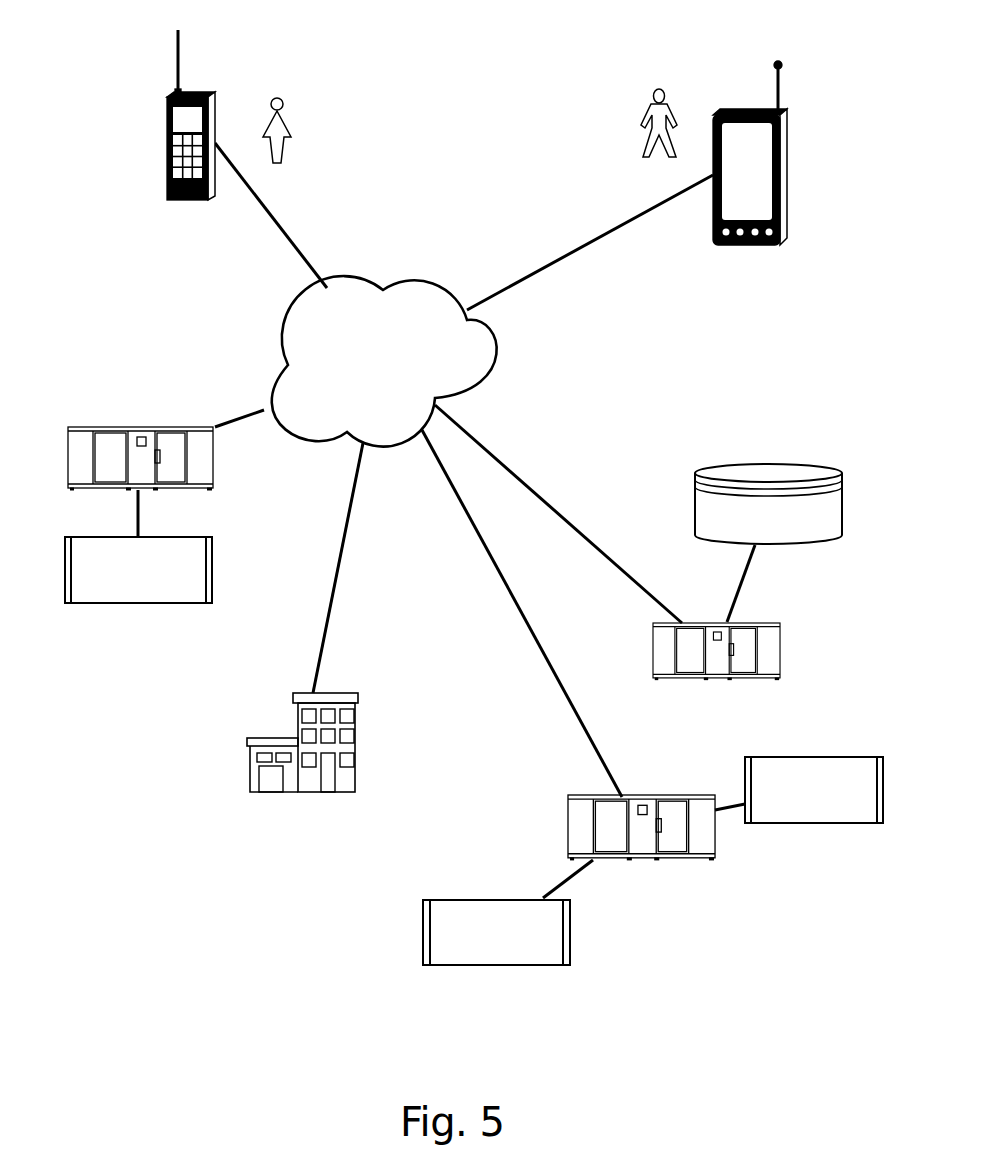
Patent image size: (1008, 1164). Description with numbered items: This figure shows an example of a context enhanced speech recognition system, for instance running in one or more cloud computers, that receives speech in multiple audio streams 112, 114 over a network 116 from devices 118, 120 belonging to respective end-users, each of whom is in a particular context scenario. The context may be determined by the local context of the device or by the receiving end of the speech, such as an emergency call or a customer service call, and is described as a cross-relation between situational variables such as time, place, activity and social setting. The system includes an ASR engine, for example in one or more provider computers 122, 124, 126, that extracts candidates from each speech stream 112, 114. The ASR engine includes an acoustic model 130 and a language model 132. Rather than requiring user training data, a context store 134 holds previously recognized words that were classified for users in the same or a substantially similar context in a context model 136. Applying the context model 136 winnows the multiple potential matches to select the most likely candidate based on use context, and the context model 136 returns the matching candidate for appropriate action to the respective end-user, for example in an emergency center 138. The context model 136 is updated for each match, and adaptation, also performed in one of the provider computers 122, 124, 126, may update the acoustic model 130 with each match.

The audio stream 112 is at (271, 215).
The audio stream 114 is at (590, 242).
The network 116 is at (288, 358).
The device 118 is at (167, 122).
The device 120 is at (787, 138).
The provider computer 122 is at (115, 427).
The provider computer 124 is at (568, 812).
The provider computer 126 is at (653, 656).
The acoustic model 130 is at (218, 561).
The language model 132 is at (423, 915).
The context store 134 is at (697, 468).
The context model 136 is at (845, 757).
The emergency center 138 is at (293, 737).